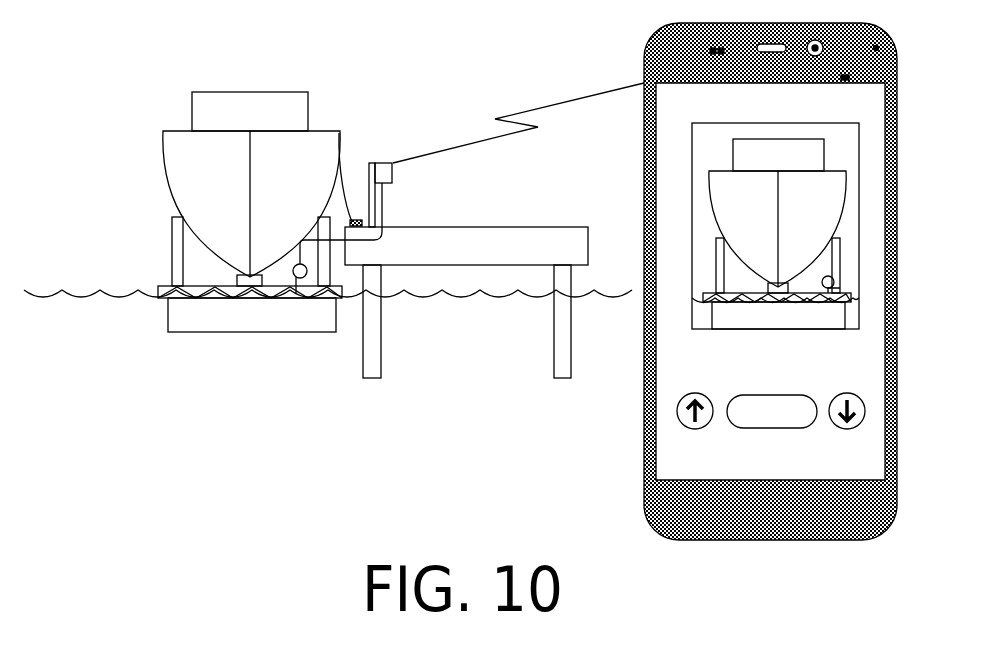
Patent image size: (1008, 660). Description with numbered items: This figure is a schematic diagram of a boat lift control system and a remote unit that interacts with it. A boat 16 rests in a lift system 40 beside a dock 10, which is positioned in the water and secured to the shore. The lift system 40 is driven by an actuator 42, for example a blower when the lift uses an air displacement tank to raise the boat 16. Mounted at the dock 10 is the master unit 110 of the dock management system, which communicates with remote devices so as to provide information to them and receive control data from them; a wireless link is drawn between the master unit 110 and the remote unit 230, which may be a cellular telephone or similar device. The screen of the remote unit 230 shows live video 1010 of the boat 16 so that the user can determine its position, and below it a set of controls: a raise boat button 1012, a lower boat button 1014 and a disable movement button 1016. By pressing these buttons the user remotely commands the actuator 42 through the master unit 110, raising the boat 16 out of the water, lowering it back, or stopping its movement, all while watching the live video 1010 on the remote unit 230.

The dock 10 is at (537, 226).
The boat 16 is at (311, 197).
The lift system 40 is at (259, 333).
The actuator 42 is at (321, 300).
The master unit 110 is at (392, 176).
The remote unit 230 is at (748, 24).
The live video 1010 is at (770, 122).
The raise boat button 1012 is at (695, 395).
The lower boat button 1014 is at (848, 394).
The disable movement button 1016 is at (780, 431).